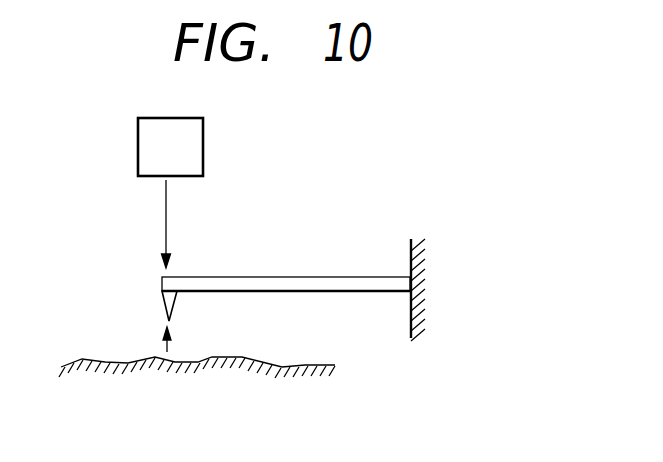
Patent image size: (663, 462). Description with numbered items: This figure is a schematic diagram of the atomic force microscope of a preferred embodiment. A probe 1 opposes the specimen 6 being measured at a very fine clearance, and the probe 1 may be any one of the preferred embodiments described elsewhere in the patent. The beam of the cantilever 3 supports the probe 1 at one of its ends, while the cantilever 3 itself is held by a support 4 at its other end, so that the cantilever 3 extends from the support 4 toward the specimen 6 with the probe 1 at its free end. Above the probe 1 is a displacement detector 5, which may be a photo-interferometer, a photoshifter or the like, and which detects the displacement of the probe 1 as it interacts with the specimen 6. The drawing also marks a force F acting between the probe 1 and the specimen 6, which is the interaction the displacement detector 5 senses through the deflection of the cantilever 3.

The probe 1 is at (160, 300).
The cantilever 3 is at (306, 277).
The support 4 is at (426, 247).
The displacement detector 5 is at (203, 139).
The specimen 6 is at (318, 358).
The force F is at (165, 349).